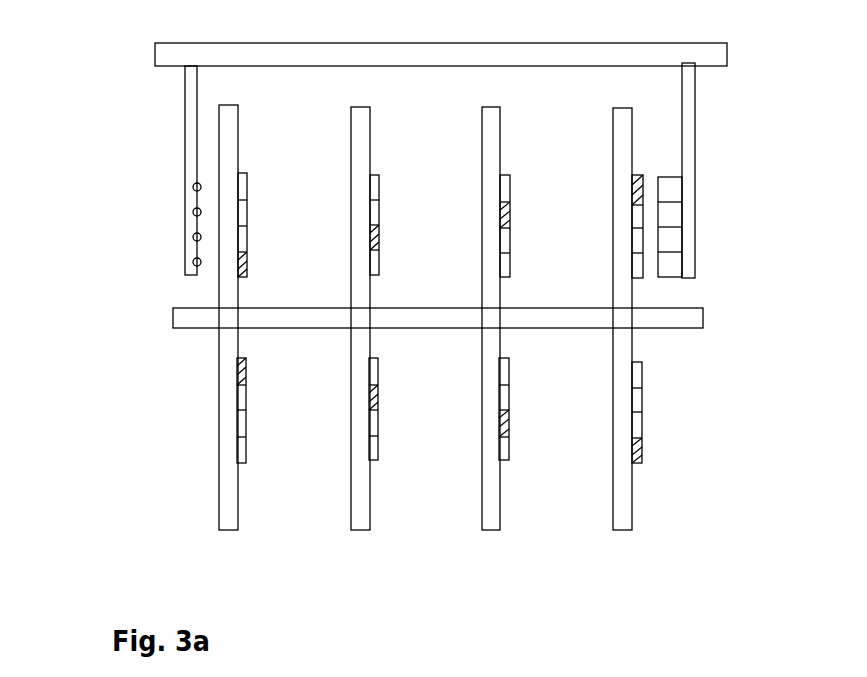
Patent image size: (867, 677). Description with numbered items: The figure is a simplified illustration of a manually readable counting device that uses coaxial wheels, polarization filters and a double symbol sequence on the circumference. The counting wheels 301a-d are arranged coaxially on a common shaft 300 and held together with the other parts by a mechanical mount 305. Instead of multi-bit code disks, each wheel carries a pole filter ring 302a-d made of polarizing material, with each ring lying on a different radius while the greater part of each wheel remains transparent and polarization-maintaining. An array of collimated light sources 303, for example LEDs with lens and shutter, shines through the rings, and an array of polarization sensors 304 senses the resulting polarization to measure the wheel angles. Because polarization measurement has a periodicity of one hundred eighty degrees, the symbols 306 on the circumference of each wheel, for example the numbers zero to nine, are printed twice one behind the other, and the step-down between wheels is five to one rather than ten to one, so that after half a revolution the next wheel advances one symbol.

The common shaft 300 is at (175, 322).
The counting wheel with double symbol labeling on circumference 301a-d is at (334, 357).
The pole filter rings with different radii 302a-d is at (630, 456).
The array of collimated light sources 303 is at (188, 255).
The array of polarization sensors 304 is at (668, 158).
The mechanical mount 305 is at (173, 52).
The symbols on the circumference of the gearwheel 306 is at (220, 437).